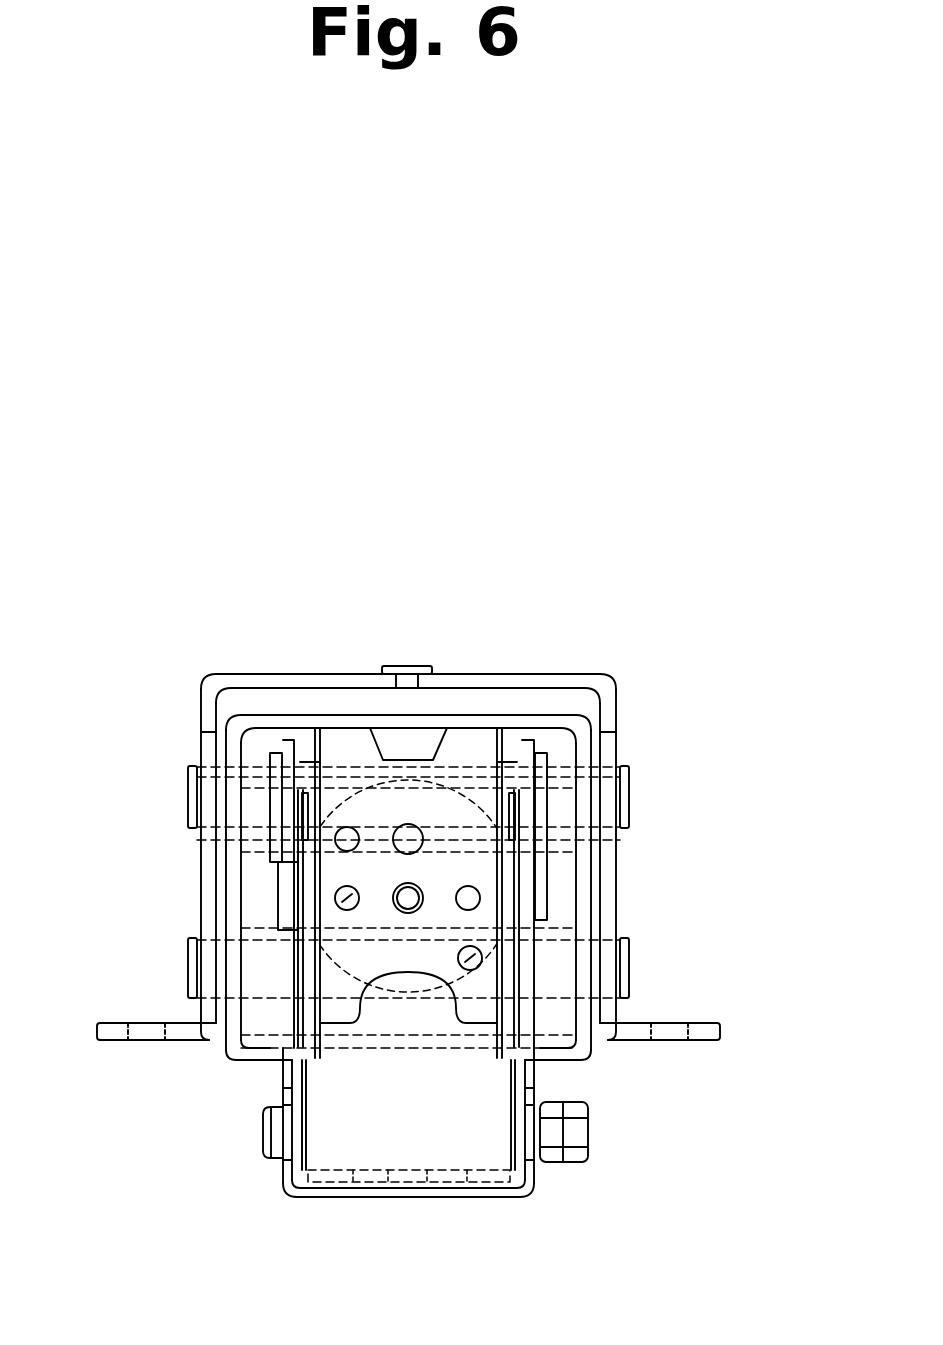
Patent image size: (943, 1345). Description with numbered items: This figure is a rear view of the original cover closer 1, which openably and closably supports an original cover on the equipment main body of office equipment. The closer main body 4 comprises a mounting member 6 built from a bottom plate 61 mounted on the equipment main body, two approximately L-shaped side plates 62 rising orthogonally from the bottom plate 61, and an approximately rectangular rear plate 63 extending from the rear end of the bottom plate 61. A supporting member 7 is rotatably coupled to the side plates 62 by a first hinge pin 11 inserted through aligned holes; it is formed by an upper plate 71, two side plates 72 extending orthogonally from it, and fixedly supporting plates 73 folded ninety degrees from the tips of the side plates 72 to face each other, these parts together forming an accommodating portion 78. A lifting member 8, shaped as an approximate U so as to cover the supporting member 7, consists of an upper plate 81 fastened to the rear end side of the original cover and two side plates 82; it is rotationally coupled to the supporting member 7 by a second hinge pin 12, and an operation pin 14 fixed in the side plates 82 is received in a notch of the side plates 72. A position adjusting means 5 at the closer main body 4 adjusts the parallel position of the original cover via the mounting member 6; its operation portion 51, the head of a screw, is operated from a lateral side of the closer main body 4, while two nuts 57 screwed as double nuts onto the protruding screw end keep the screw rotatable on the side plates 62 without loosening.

The original cover closer 1 is at (727, 583).
The closer main body 4 is at (194, 682).
The position adjusting means 5 is at (600, 1135).
The mounting member 6 is at (535, 1193).
The supporting member 7 is at (263, 720).
The lifting member 8 is at (574, 672).
The first hinge pin 11 is at (632, 957).
The second hinge pin 12 is at (632, 790).
The operation pin 14 is at (190, 806).
The operation portion 51 is at (273, 1155).
The nut 57 is at (577, 1162).
The bottom plate 61 is at (333, 1197).
The side plate 62 is at (287, 1090).
The rear plate 63 is at (405, 1145).
The upper plate 71 is at (467, 714).
The side plate 72 is at (232, 900).
The fixedly supporting plate 73 is at (245, 1058).
The accommodating portion 78 is at (262, 1022).
The upper plate 81 is at (350, 674).
The side plate 82 is at (200, 712).